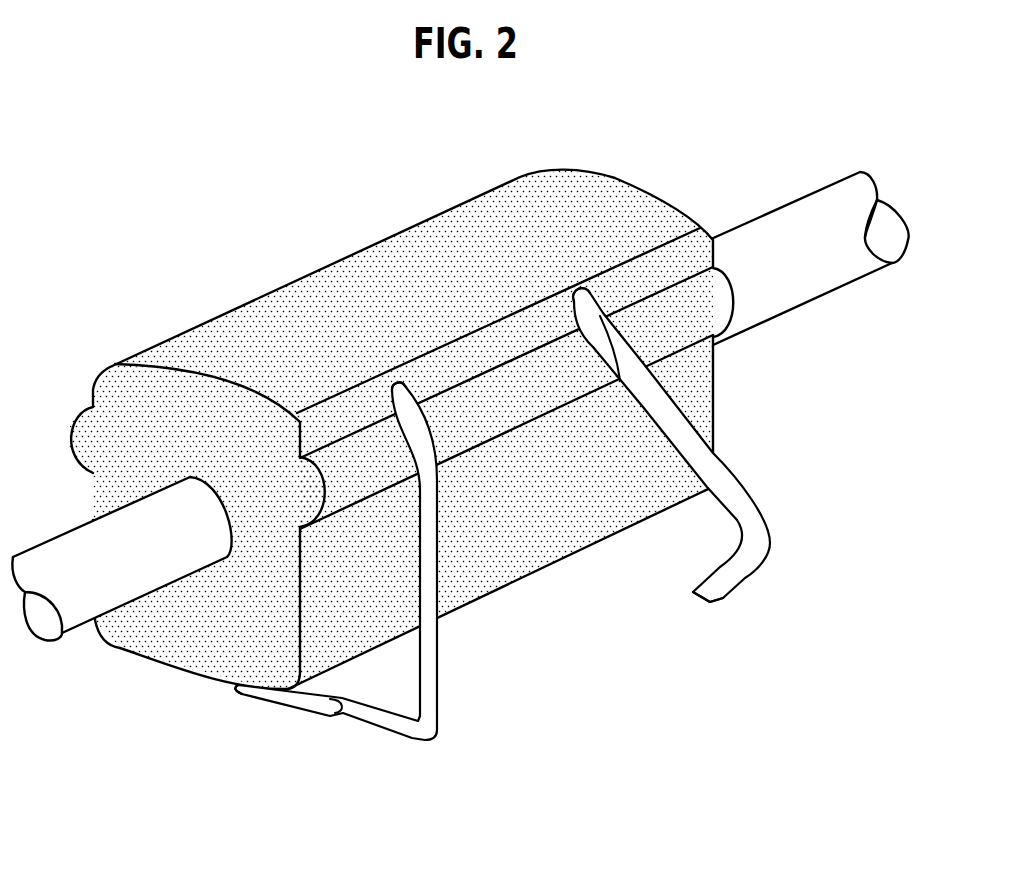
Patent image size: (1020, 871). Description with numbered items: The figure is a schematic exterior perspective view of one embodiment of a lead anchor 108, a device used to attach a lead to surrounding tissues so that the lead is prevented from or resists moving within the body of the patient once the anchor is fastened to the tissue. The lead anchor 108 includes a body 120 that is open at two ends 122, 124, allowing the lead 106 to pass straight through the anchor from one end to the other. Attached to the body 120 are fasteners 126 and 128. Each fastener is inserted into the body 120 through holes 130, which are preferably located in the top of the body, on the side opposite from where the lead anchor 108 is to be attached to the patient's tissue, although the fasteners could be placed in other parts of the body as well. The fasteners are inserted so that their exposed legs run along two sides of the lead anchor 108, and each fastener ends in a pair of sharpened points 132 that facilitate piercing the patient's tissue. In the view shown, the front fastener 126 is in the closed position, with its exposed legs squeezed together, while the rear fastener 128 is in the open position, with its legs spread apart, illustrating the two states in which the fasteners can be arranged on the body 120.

The lead 106 is at (87, 595).
The lead anchor 108 is at (153, 166).
The body 120 is at (535, 532).
The end 122 is at (193, 473).
The end 124 is at (722, 186).
The fastener 126 is at (390, 727).
The fastener 128 is at (727, 493).
The holes 130 is at (583, 293).
The sharpened points 132 is at (336, 714).